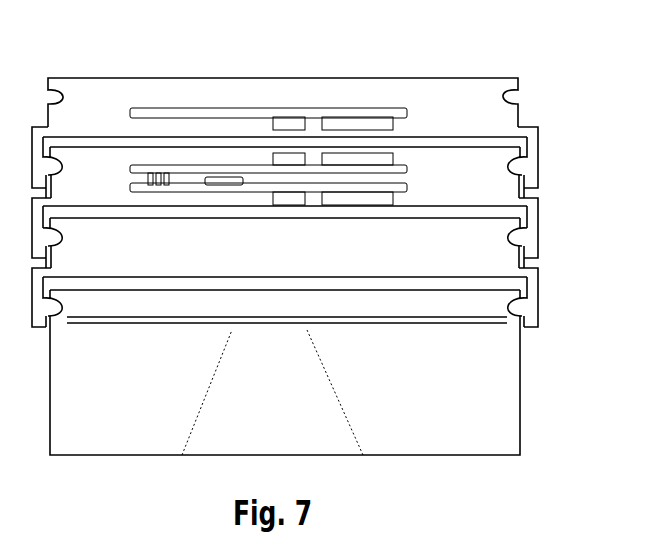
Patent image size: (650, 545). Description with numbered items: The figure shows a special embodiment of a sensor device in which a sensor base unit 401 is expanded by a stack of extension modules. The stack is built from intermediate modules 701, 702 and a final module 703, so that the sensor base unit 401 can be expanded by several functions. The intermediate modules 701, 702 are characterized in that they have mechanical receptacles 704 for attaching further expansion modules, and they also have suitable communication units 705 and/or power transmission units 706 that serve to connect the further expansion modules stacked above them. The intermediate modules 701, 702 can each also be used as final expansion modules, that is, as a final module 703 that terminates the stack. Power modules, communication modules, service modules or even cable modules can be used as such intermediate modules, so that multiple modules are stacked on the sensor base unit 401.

The final module 703 is at (538, 135).
The intermediate module 701 is at (538, 203).
The intermediate module 702 is at (538, 277).
The mechanical receptacle 704 is at (67, 236).
The communication unit 705 is at (273, 126).
The power transmission unit 706 is at (395, 126).
The sensor base unit 401 is at (520, 400).